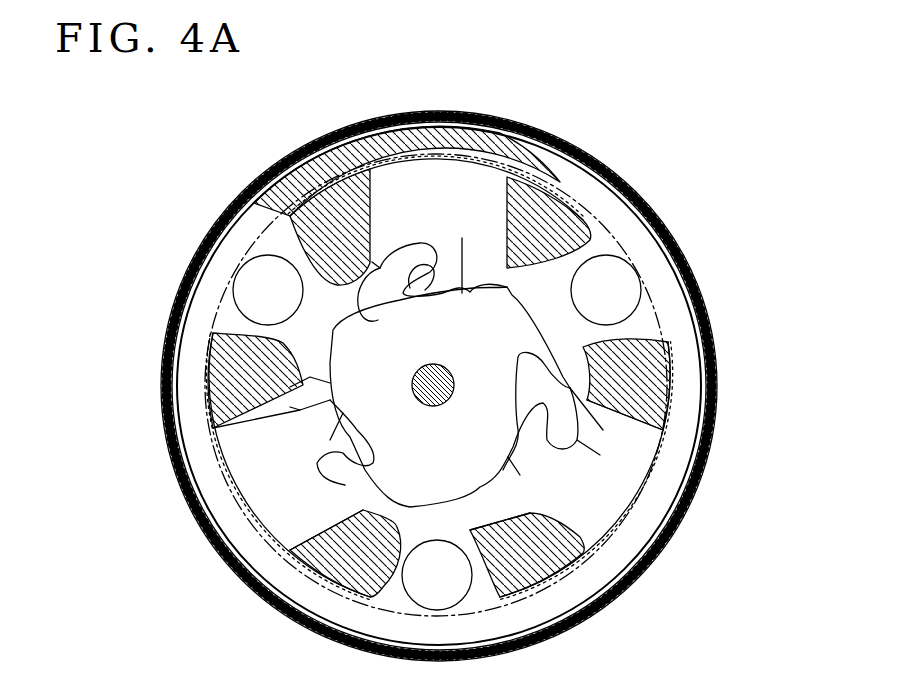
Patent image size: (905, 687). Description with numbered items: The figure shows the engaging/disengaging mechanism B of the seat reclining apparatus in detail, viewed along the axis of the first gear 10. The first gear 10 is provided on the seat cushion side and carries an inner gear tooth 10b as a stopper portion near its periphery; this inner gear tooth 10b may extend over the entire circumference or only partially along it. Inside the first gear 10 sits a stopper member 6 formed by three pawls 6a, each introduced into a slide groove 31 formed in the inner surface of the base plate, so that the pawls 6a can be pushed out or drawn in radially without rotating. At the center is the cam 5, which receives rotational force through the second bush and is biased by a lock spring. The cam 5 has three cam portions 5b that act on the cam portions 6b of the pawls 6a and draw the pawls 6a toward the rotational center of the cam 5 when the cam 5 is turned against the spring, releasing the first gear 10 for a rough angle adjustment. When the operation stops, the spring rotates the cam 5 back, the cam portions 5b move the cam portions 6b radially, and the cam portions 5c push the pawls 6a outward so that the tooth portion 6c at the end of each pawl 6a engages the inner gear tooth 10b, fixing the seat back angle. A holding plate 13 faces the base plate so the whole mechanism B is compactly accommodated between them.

The first gear 10 is at (345, 138).
The inner gear tooth 10b is at (410, 165).
The holding plate 13 is at (650, 205).
The engaging/disengaging mechanism B is at (250, 232).
The stopper member 6 is at (666, 461).
The tooth portion 6c is at (475, 158).
The pawl 6a is at (320, 420).
The cam portion of pawl 6b is at (410, 288).
The cam 5 is at (545, 322).
The cam portion 5b is at (380, 268).
The cam portion 5c is at (553, 477).
The slide groove 31 is at (497, 292).